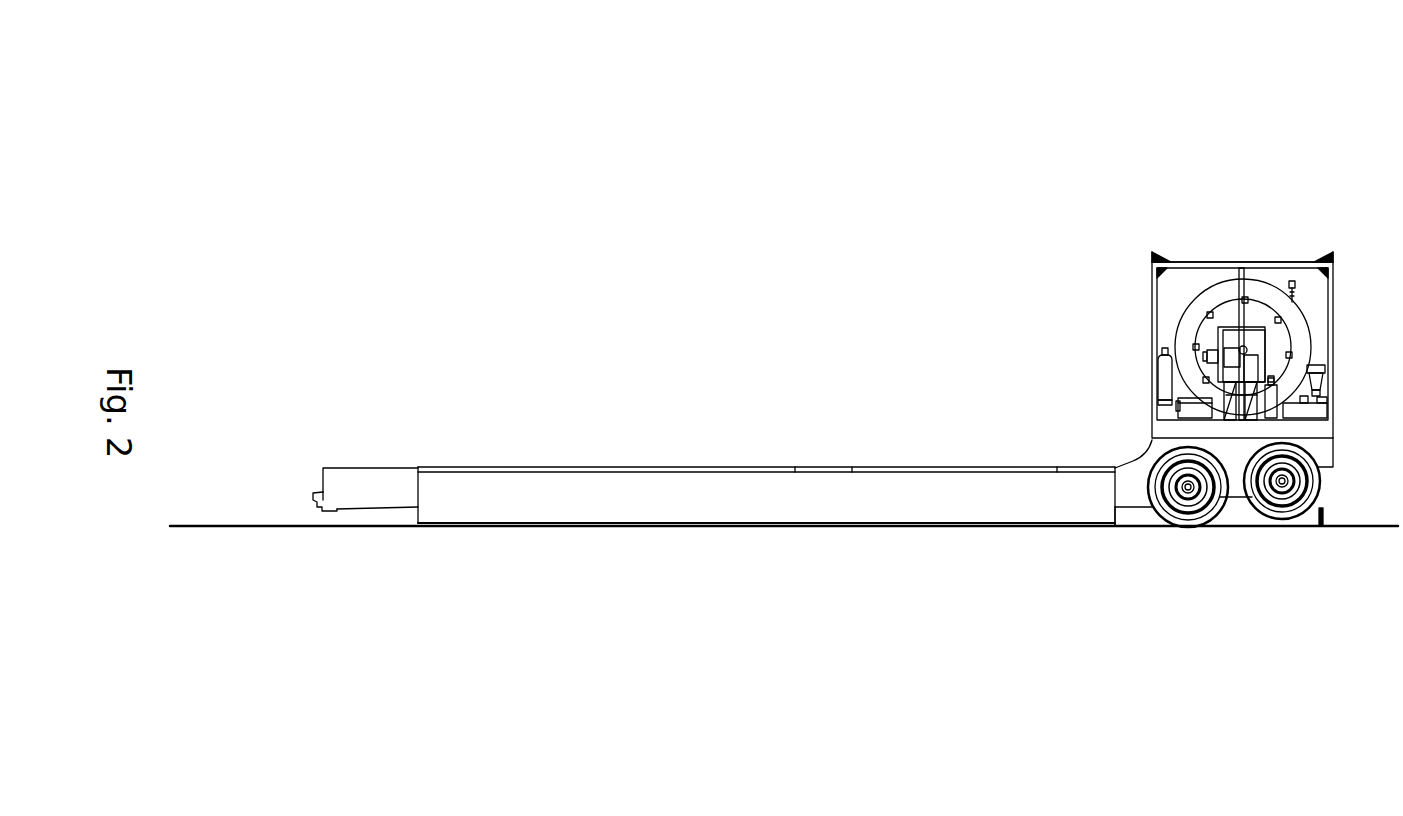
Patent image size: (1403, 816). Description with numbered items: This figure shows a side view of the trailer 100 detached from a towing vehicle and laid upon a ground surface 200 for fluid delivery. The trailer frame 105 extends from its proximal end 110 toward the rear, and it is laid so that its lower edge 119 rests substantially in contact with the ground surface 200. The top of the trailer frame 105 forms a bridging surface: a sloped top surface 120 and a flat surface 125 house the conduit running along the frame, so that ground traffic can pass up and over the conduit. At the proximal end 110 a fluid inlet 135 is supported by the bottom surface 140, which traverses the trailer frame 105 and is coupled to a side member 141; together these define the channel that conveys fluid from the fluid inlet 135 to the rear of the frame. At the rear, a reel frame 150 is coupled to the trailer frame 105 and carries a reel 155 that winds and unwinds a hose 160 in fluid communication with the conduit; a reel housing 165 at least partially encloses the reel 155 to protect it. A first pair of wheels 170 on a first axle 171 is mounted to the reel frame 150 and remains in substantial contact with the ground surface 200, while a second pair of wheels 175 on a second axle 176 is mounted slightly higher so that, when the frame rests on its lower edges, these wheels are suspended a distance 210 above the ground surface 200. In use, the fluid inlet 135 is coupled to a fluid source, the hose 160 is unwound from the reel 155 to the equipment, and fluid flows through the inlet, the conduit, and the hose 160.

The trailer 100 is at (456, 145).
The trailer frame 105 is at (714, 432).
The proximal end 110 is at (416, 492).
The lower edge 119 is at (740, 524).
The sloped top surface 120 is at (648, 500).
The flat surface 125 is at (525, 465).
The fluid inlet 135 is at (351, 445).
The bottom surface 140 is at (386, 508).
The side member 141 is at (362, 500).
The reel frame 150 is at (1157, 489).
The reel 155 is at (1183, 353).
The hose 160 is at (1198, 314).
The reel housing 165 is at (1152, 262).
The first pair of wheels 170 is at (1162, 550).
The first axle 171 is at (1190, 490).
The second pair of wheels 175 is at (1295, 555).
The second axle 176 is at (1284, 483).
The ground surface 200 is at (258, 522).
The distance 210 is at (1325, 516).